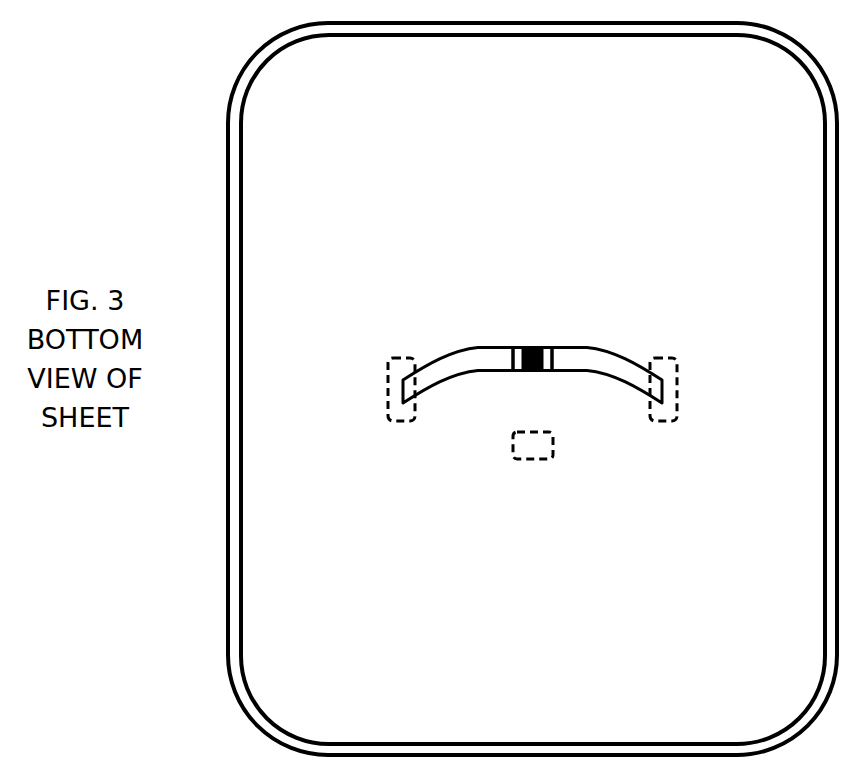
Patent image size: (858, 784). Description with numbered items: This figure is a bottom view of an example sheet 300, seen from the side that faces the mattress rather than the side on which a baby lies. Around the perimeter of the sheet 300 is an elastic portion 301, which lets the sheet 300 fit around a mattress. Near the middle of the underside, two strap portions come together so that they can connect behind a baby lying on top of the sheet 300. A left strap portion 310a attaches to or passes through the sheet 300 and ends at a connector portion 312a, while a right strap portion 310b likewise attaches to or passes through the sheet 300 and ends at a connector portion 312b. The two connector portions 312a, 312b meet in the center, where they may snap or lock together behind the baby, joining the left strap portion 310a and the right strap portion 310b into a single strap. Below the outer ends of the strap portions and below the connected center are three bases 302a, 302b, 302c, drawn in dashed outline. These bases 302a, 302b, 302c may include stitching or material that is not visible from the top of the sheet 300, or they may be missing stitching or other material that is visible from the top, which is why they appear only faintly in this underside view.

The sheet 300 is at (540, 92).
The elastic portion 301 is at (226, 131).
The base 302a is at (392, 410).
The base 302b is at (668, 412).
The base 302c is at (541, 452).
The left strap portion 310a is at (432, 364).
The right strap portion 310b is at (626, 364).
The connector portion 312a is at (519, 356).
The connector portion 312b is at (547, 356).